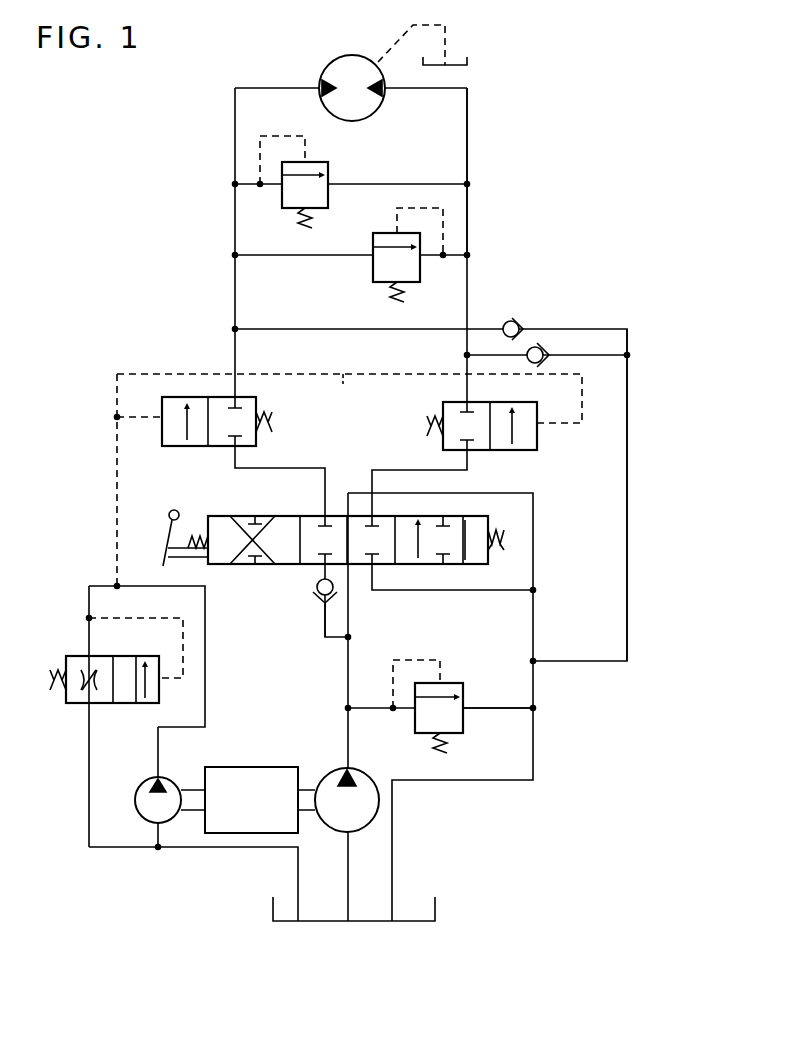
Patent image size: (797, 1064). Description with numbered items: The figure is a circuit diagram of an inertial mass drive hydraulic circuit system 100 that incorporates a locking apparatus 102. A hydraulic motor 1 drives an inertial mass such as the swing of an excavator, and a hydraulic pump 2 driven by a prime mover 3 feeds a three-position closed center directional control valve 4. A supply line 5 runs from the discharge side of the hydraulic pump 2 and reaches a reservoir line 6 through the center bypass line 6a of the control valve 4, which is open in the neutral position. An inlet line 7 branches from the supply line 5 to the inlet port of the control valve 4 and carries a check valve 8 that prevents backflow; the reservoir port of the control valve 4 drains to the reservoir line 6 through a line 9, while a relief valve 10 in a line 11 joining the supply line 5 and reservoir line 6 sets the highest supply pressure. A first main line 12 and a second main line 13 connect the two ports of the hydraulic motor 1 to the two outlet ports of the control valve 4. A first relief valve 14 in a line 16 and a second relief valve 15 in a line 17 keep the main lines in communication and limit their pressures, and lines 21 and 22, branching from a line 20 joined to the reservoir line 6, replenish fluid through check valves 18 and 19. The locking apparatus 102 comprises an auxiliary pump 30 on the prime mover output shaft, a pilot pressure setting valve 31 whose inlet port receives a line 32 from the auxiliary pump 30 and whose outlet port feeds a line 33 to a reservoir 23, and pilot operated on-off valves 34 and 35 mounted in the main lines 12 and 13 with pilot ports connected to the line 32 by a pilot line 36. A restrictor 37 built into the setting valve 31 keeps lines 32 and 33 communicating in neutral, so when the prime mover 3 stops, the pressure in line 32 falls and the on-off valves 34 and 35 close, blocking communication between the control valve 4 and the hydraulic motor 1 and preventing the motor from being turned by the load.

The hydraulic motor 1 is at (327, 70).
The hydraulic pump 2 is at (355, 770).
The prime mover 3 is at (255, 767).
The three-position directional control valve 4 is at (214, 516).
The supply line 5 is at (348, 676).
The reservoir line 6 is at (534, 680).
The center bypass line 6a is at (347, 492).
The inlet line 7 is at (324, 638).
The check valve 8 is at (314, 595).
The line 9 is at (478, 591).
The relief valve 10 is at (463, 722).
The line 11 is at (492, 710).
The first main line 12 is at (233, 212).
The second main line 13 is at (470, 232).
The first relief valve 14 is at (328, 178).
The second relief valve 15 is at (375, 270).
The line 16 is at (438, 136).
The line 17 is at (298, 258).
The check valve 18 is at (517, 321).
The check valve 19 is at (547, 363).
The line 20 is at (628, 496).
The line 21 is at (578, 329).
The line 22 is at (627, 358).
The reservoir 23 is at (437, 910).
The auxiliary pump 30 is at (149, 780).
The pilot pressure setting valve 31 is at (72, 656).
The line 32 is at (205, 648).
The line 33 is at (125, 848).
The pilot operated on-off valve 34 is at (166, 395).
The pilot operated on-off valve 35 is at (537, 445).
The pilot line 36 is at (349, 395).
The restrictor 37 is at (80, 683).
The inertial mass drive hydraulic circuit system 100 is at (490, 147).
The locking apparatus 102 is at (107, 400).